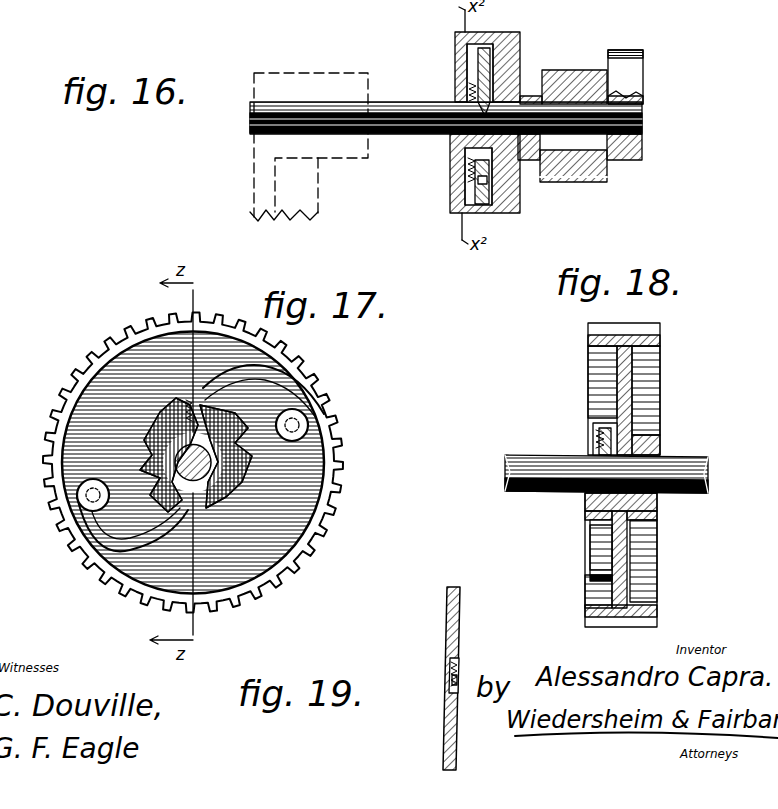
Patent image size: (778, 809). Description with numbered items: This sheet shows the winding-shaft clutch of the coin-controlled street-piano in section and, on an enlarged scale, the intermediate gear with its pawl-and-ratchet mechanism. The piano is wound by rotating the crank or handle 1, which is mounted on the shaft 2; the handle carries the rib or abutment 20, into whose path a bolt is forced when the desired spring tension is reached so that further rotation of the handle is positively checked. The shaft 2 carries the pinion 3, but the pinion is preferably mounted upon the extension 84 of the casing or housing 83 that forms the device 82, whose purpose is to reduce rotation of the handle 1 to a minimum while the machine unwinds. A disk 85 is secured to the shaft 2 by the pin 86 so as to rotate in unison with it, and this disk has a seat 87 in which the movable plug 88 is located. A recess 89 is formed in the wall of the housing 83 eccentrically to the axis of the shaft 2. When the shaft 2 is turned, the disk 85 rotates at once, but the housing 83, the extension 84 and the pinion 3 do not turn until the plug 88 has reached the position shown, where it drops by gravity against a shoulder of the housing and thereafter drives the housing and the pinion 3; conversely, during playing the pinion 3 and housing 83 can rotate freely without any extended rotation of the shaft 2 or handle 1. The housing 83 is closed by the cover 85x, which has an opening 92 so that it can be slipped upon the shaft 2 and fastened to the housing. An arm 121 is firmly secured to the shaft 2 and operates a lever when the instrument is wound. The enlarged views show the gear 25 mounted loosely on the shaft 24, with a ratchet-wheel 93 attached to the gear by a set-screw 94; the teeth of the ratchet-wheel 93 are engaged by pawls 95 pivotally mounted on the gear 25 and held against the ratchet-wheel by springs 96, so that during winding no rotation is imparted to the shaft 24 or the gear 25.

In FIG. 16, the crank or handle 1 is at (302, 145).
In FIG. 16, the shaft 2 is at (446, 108).
In FIG. 16, the pinion 3 is at (580, 167).
In FIG. 16, the rib or abutment 20 is at (300, 200).
In FIG. 18, the shaft 24 is at (690, 460).
In FIG. 17, the gear 25 is at (193, 463).
In FIG. 18, the gear 25 is at (638, 475).
In FIG. 16, the device 82 is at (521, 42).
In FIG. 16, the casing or housing 83 is at (572, 70).
In FIG. 16, the extension 84 is at (527, 95).
In FIG. 16, the disk 85 is at (522, 48).
In FIG. 16, the cover 85x is at (456, 166).
In FIG. 19, the cover 85x is at (458, 628).
In FIG. 16, the pin 86 is at (456, 68).
In FIG. 16, the seat 87 is at (452, 182).
In FIG. 16, the movable plug or pin 88 is at (485, 214).
In FIG. 16, the recess 89 is at (497, 210).
In FIG. 16, the opening 92 is at (470, 104).
In FIG. 19, the opening 92 is at (449, 678).
In FIG. 17, the ratchet-wheel 93 is at (170, 430).
In FIG. 18, the ratchet-wheel 93 is at (593, 438).
In FIG. 17, the set-screw 94 is at (192, 425).
In FIG. 18, the set-screw 94 is at (596, 447).
In FIG. 17, the pawls 95 is at (300, 400).
In FIG. 18, the pawls 95 is at (590, 545).
In FIG. 17, the springs 96 is at (278, 370).
In FIG. 18, the springs 96 is at (586, 572).
In FIG. 16, the arm 121 is at (627, 80).